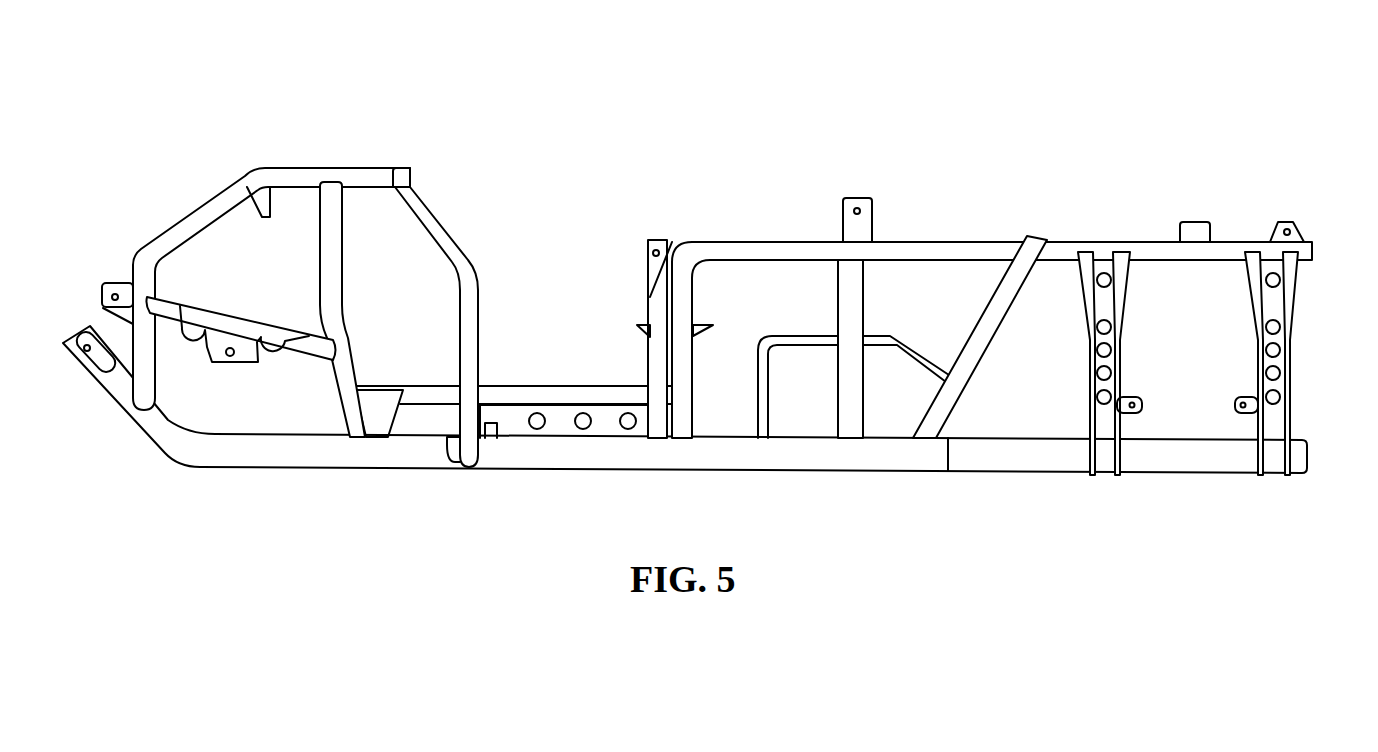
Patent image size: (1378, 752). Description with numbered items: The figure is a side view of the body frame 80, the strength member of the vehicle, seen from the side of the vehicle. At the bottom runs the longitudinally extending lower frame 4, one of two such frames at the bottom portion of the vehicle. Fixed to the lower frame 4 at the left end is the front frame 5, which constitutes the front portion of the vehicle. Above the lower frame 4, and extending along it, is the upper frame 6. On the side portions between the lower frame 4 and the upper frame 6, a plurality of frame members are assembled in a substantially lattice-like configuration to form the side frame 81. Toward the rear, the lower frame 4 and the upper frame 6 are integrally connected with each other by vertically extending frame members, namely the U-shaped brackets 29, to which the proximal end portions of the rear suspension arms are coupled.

The lower frame 4 is at (259, 467).
The front frame 5 is at (197, 217).
The upper frame 6 is at (1153, 247).
The U-shaped bracket 29 is at (1100, 420).
The body frame 80 is at (712, 286).
The side frame 81 is at (774, 245).